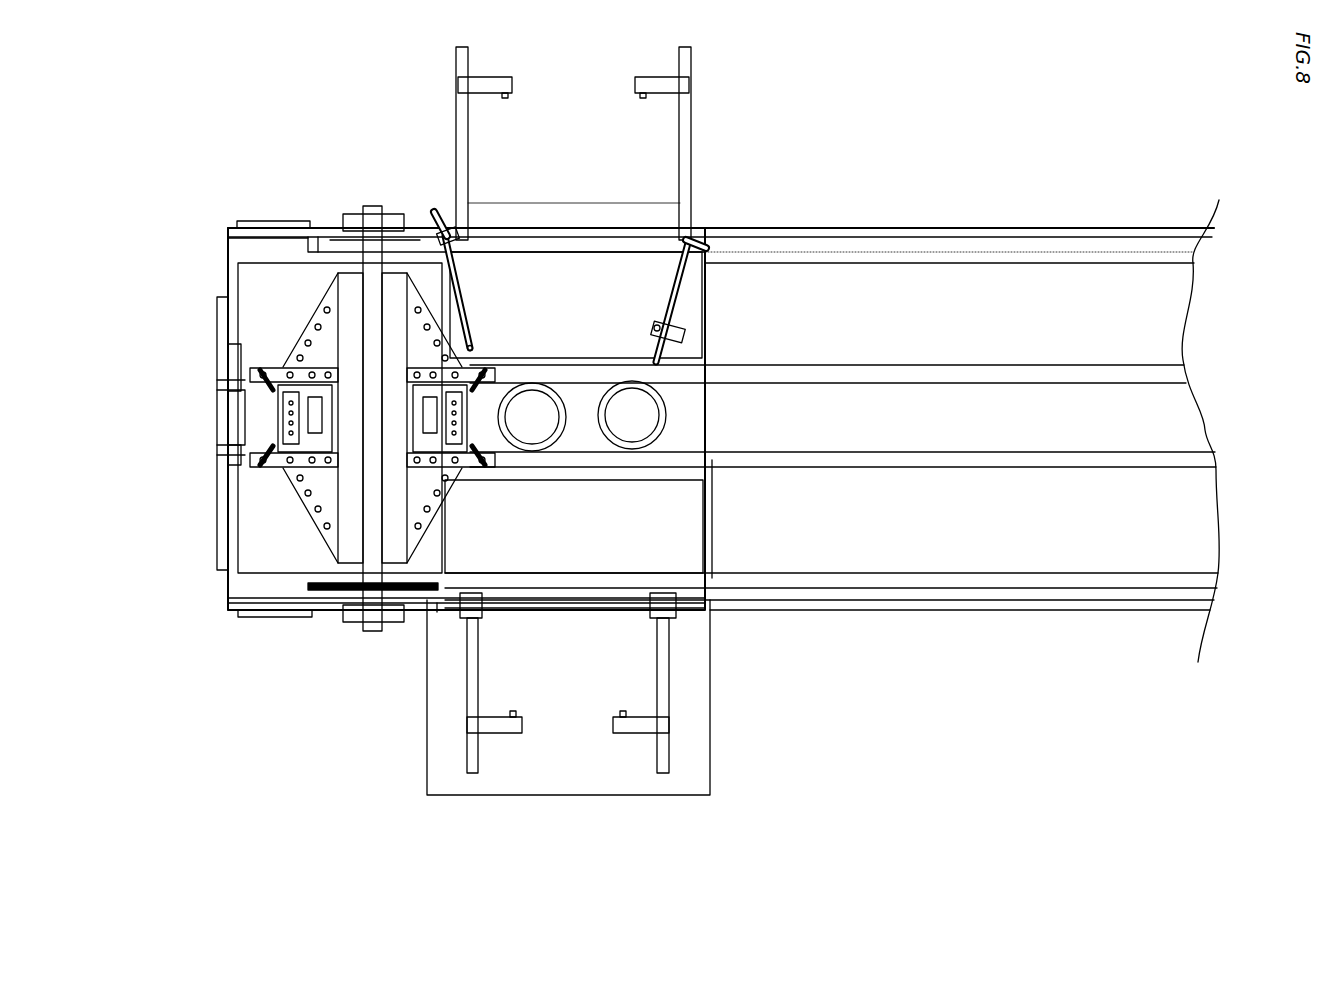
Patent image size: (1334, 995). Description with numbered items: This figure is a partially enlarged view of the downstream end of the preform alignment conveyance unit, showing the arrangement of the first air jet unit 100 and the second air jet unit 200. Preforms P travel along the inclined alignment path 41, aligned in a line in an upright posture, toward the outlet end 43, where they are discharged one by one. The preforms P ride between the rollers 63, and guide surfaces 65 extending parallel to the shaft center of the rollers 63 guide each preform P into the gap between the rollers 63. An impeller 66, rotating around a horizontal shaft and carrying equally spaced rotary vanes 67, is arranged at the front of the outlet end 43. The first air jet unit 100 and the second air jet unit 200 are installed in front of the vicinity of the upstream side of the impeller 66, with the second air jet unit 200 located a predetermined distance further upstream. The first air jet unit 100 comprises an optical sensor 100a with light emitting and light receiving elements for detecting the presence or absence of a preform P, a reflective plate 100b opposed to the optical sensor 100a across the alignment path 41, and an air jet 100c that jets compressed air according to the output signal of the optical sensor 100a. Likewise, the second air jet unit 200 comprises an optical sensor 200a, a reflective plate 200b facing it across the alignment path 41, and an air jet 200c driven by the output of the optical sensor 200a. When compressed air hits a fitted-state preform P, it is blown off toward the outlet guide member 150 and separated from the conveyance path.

The alignment path 41 is at (1102, 438).
The outlet end 43 is at (210, 425).
The roller 63 is at (860, 362).
The guide surface 65 is at (1078, 296).
The impeller 66 is at (298, 303).
The rotary vane 67 is at (318, 290).
The first air jet unit 100 is at (511, 410).
The optical sensor 100a is at (510, 99).
The reflective plate 100b is at (513, 710).
The air jet 100c is at (472, 320).
The second air jet unit 200 is at (702, 410).
The optical sensor 200a is at (640, 99).
The reflective plate 200b is at (623, 711).
The air jet 200c is at (650, 350).
The outlet guide member 150 is at (580, 775).
The preform P is at (672, 408).